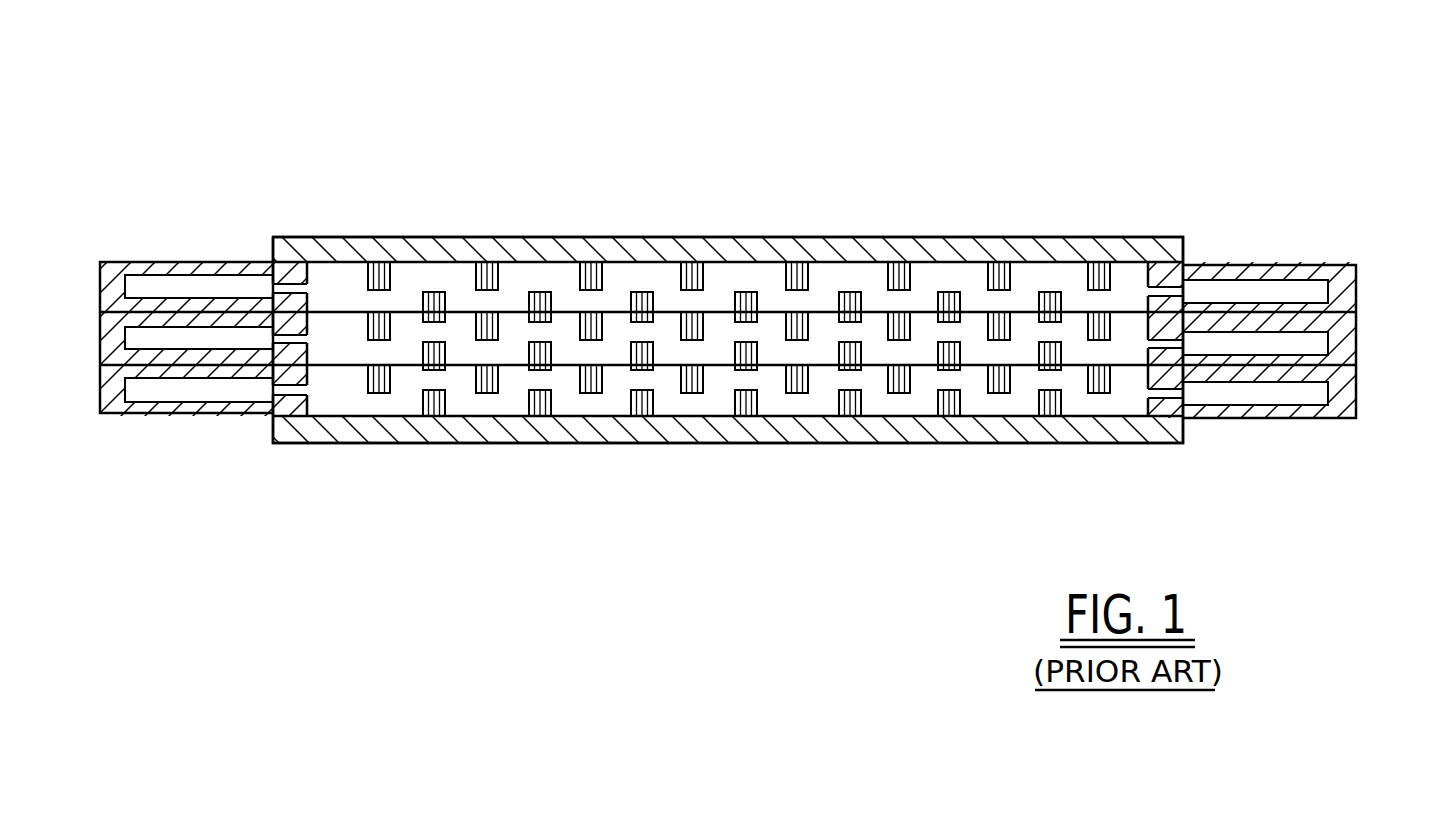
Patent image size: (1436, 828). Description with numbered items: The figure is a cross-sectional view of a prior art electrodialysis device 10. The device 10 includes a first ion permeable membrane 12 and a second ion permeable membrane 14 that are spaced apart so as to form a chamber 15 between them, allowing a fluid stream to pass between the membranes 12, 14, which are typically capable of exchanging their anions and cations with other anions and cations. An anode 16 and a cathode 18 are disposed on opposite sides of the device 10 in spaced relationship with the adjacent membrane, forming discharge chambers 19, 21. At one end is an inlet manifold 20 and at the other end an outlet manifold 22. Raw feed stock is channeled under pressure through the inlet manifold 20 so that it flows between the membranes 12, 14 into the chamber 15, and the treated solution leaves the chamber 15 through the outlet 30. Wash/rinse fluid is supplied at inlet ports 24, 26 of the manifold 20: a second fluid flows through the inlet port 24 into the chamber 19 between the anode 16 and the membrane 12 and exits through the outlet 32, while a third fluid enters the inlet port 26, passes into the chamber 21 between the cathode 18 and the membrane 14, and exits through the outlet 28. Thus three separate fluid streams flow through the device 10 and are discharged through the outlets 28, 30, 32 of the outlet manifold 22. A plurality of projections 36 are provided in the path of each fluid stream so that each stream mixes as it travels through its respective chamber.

The electrodialysis device 10 is at (934, 121).
The first ion permeable membrane 12 is at (770, 311).
The second ion permeable membrane 14 is at (512, 367).
The chamber 15 is at (407, 345).
The anode 16 is at (455, 243).
The cathode 18 is at (773, 443).
The discharge chamber 19 is at (620, 290).
The inlet manifold 20 is at (99, 412).
The discharge chamber 21 is at (610, 388).
The outlet manifold 22 is at (1355, 266).
The inlet port 24 is at (221, 283).
The inlet port 26 is at (175, 388).
The outlet 28 is at (1313, 396).
The outlet 30 is at (1313, 348).
The outlet 32 is at (1318, 296).
The projections 36 is at (948, 305).